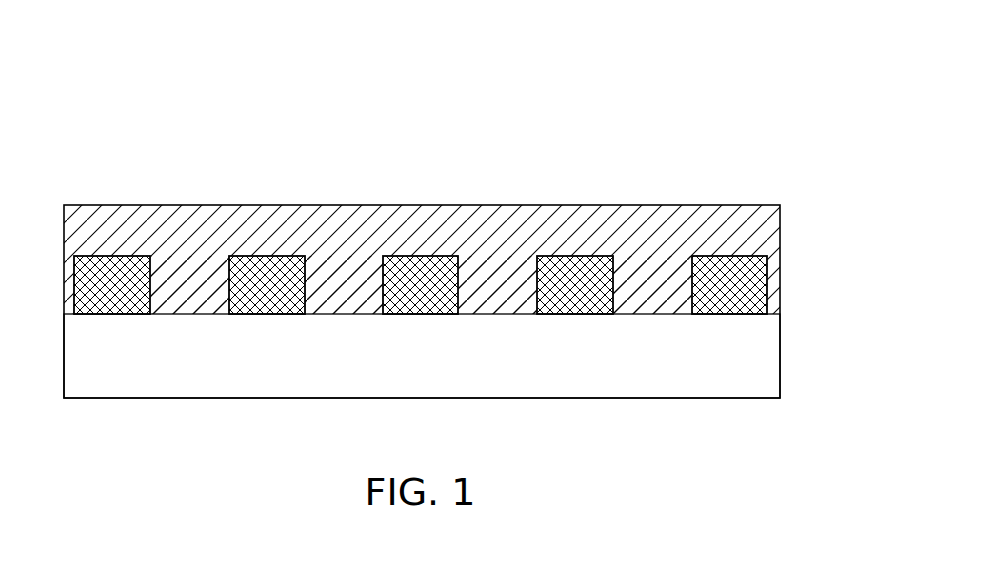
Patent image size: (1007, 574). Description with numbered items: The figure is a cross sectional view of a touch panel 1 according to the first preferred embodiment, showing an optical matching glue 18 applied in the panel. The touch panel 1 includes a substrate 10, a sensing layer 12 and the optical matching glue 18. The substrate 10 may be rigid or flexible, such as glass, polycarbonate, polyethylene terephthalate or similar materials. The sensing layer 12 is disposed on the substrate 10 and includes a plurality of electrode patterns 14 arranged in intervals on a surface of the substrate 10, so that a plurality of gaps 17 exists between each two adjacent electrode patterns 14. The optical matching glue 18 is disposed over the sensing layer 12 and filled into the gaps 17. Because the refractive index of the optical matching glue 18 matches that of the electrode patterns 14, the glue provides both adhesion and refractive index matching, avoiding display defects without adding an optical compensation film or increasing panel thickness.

The touch panel 1 is at (738, 79).
The substrate 10 is at (328, 368).
The sensing layer 12 is at (737, 140).
The electrode patterns 14 is at (420, 226).
The gaps 17 is at (661, 302).
The optical matching glue 18 is at (761, 207).